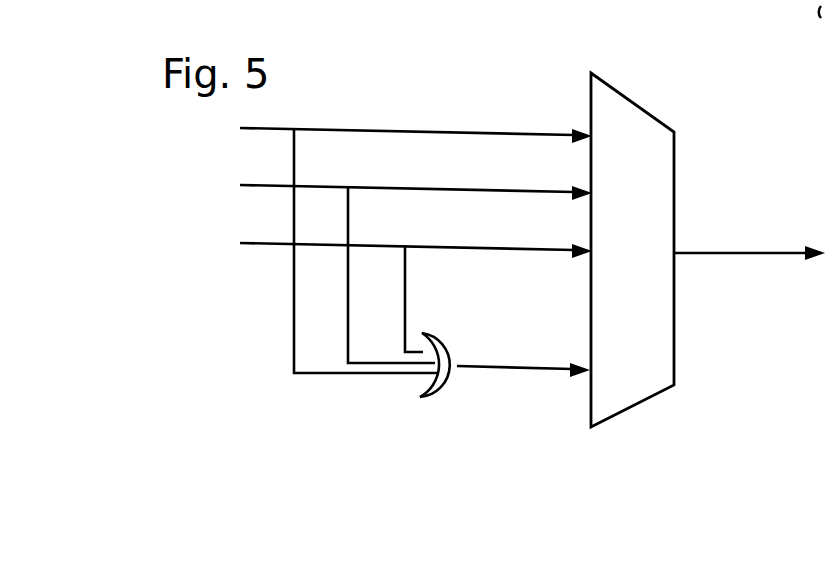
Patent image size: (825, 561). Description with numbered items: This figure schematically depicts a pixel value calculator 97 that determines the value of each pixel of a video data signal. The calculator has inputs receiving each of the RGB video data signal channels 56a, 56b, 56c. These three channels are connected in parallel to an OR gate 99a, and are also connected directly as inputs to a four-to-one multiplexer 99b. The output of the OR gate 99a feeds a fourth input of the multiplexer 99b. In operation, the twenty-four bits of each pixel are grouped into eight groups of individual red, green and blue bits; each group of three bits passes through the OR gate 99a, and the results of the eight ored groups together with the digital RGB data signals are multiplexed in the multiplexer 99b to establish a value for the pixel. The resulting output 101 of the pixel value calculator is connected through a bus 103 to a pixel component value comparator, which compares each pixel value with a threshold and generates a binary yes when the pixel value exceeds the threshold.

The RGB video data signal channel 56a is at (272, 131).
The RGB video data signal channel 56b is at (262, 188).
The RGB video data signal channel 56c is at (262, 245).
The OR gate 99a is at (458, 357).
The 4:1 multiplexer 99b is at (643, 113).
The pixel value calculator 97 is at (437, 414).
The output of the pixel value calculator 101 is at (677, 252).
The bus 103 is at (787, 253).